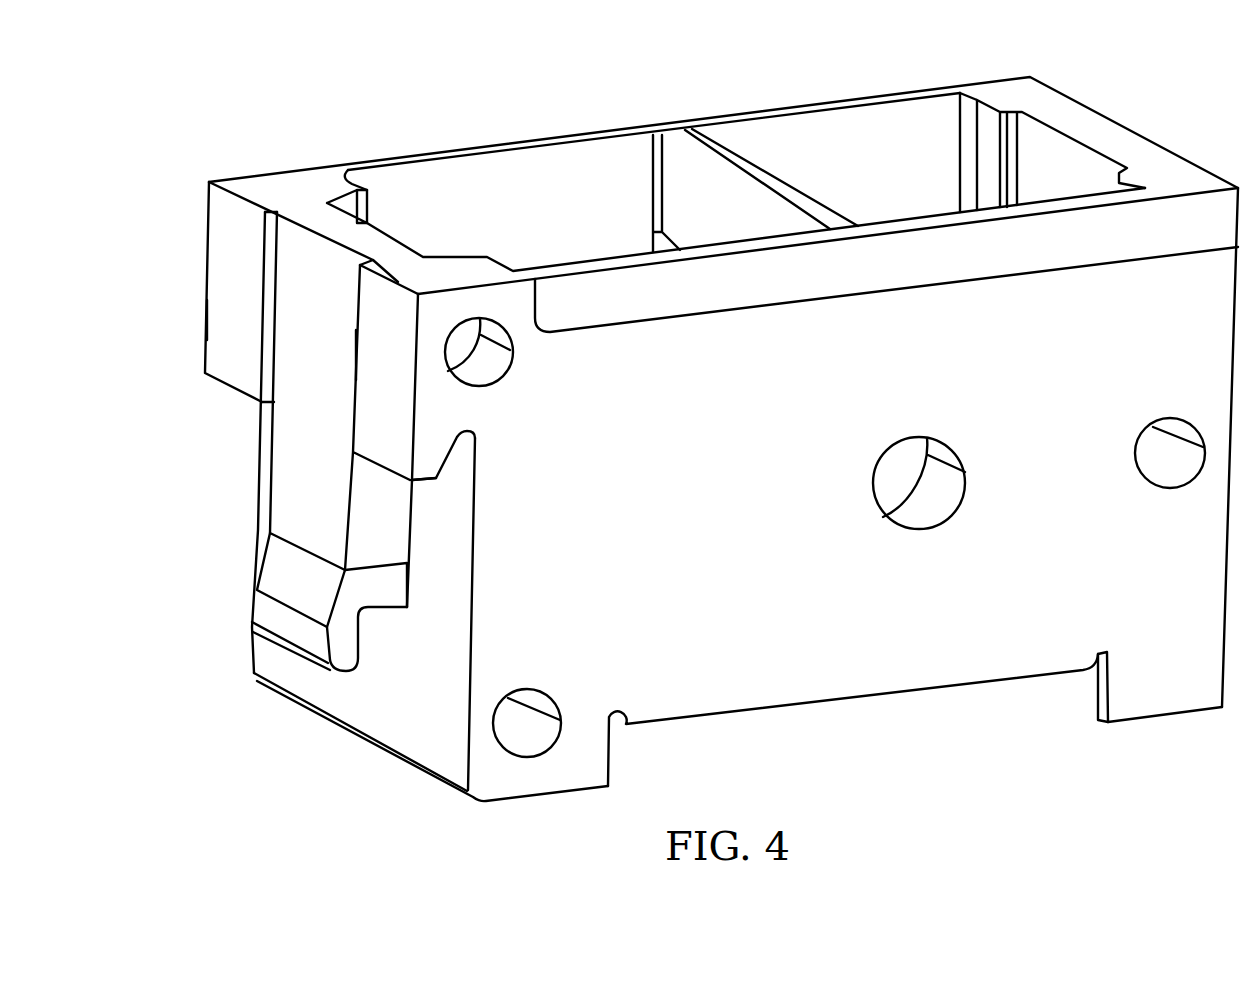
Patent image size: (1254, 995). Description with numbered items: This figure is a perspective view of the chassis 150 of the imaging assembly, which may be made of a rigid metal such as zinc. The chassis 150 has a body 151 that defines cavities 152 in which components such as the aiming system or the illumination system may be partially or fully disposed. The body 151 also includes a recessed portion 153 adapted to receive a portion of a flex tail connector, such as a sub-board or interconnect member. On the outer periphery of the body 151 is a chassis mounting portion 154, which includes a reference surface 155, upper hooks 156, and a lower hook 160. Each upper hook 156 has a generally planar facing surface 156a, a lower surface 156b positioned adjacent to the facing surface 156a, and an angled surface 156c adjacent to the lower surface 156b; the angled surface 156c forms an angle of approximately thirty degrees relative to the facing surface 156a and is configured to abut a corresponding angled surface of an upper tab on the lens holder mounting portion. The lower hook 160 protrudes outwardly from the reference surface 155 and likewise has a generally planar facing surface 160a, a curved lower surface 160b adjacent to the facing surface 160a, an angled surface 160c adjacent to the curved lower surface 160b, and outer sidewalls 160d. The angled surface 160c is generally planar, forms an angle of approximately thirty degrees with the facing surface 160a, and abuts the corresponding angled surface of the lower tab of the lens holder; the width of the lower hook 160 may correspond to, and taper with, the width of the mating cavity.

The chassis 150 is at (483, 146).
The body 151 is at (922, 371).
The cavity 152 is at (597, 165).
The recessed portion 153 is at (959, 711).
The chassis mounting portion 154 is at (193, 400).
The reference surface 155 is at (458, 679).
The upper hook 156 is at (223, 238).
The facing surface 156a is at (209, 333).
The lower surface 156b is at (436, 492).
The angled surface 156c is at (458, 460).
The lower hook 160 is at (302, 467).
The facing surface 160a is at (305, 523).
The curved lower surface 160b is at (275, 656).
The angled surface 160c is at (358, 662).
The outer sidewalls 160d is at (386, 553).